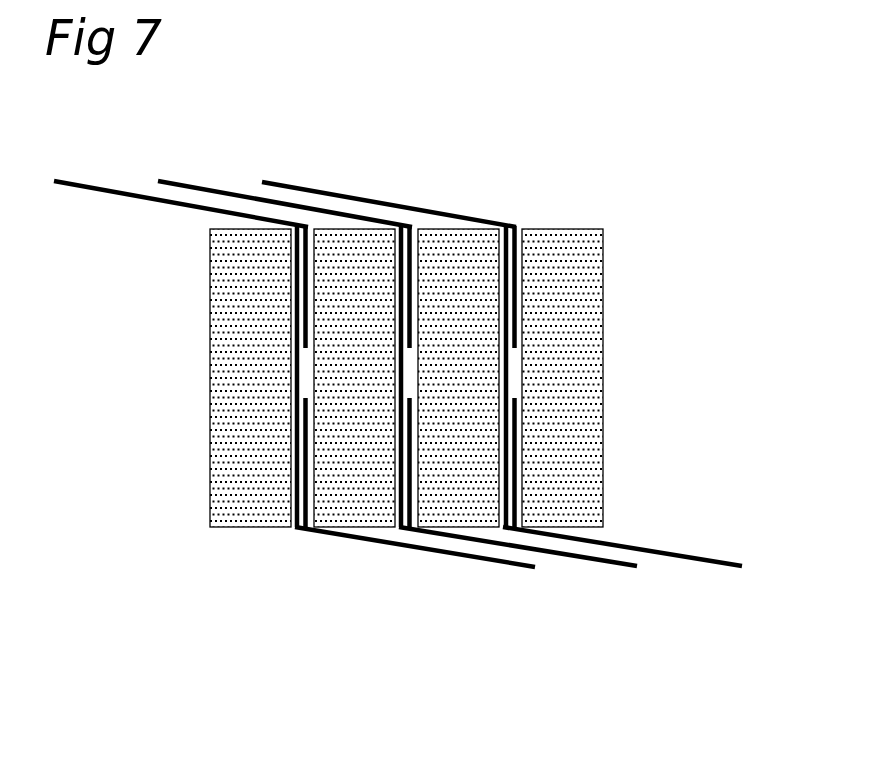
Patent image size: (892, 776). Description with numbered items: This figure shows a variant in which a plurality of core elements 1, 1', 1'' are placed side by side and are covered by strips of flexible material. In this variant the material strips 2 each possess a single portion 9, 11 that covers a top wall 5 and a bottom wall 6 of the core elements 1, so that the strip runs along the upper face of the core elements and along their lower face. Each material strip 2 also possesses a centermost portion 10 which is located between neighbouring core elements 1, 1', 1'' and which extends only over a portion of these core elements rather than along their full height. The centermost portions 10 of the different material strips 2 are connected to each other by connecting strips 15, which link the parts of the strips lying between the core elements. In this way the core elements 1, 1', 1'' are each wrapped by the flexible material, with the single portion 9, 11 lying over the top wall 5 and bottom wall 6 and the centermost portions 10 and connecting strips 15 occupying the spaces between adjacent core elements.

The core element 1 is at (250, 414).
The core element 1' is at (354, 414).
The core element 1'' is at (458, 414).
The material strip 2 is at (197, 194).
The top wall 5 is at (368, 190).
The bottom wall 6 is at (487, 602).
The single portion 9 is at (116, 188).
The centermost portion 10 is at (308, 280).
The single portion 11 is at (492, 570).
The connecting strip 15 is at (302, 370).